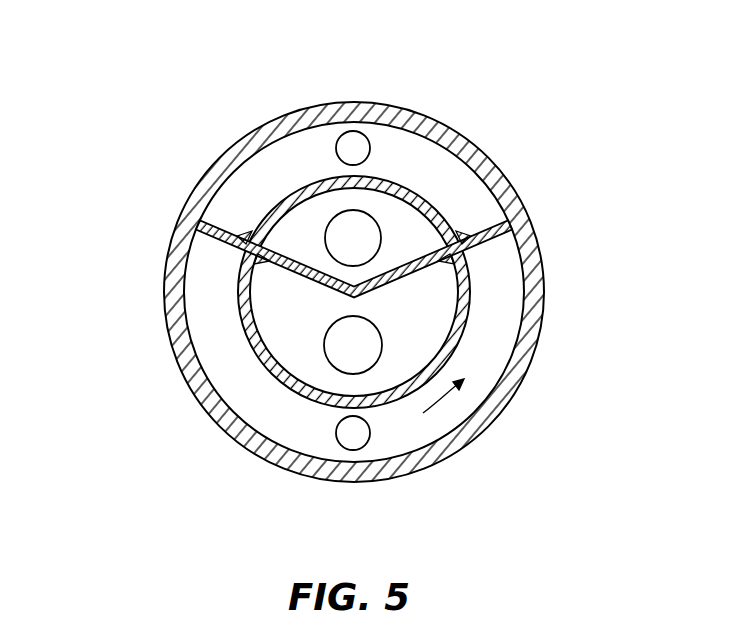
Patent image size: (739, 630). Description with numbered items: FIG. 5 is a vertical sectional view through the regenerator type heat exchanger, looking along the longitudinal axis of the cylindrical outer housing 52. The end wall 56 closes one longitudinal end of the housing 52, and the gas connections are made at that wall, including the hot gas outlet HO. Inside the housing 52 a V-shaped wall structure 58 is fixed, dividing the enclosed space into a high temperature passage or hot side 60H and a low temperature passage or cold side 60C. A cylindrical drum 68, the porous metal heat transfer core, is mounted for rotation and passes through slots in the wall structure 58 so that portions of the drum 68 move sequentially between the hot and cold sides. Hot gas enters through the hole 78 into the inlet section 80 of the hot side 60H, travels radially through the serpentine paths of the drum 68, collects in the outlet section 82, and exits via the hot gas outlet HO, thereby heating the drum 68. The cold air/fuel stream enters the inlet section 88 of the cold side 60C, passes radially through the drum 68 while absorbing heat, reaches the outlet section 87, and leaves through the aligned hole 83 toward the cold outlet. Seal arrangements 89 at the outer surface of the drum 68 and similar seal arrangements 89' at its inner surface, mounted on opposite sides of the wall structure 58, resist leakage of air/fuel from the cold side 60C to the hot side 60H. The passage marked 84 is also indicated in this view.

The cylindrical outer housing 52 is at (475, 143).
The circular end wall 56 is at (506, 335).
The V-shaped wall structure 58 is at (212, 222).
The low temperature passage 60C is at (410, 142).
The high temperature passage 60H is at (472, 410).
The cylindrical drum 68 is at (266, 384).
The hole 78 is at (337, 367).
The inlet section 80 is at (427, 347).
The outlet section 82 is at (450, 418).
The hole 83 is at (354, 130).
The cold outlet passage CO 84 is at (332, 258).
The outlet section 87 is at (313, 217).
The inlet section 88 is at (305, 147).
The seal arrangement 89 is at (344, 226).
The seal arrangement 89' is at (351, 302).
The hot gas outlet HO is at (353, 450).